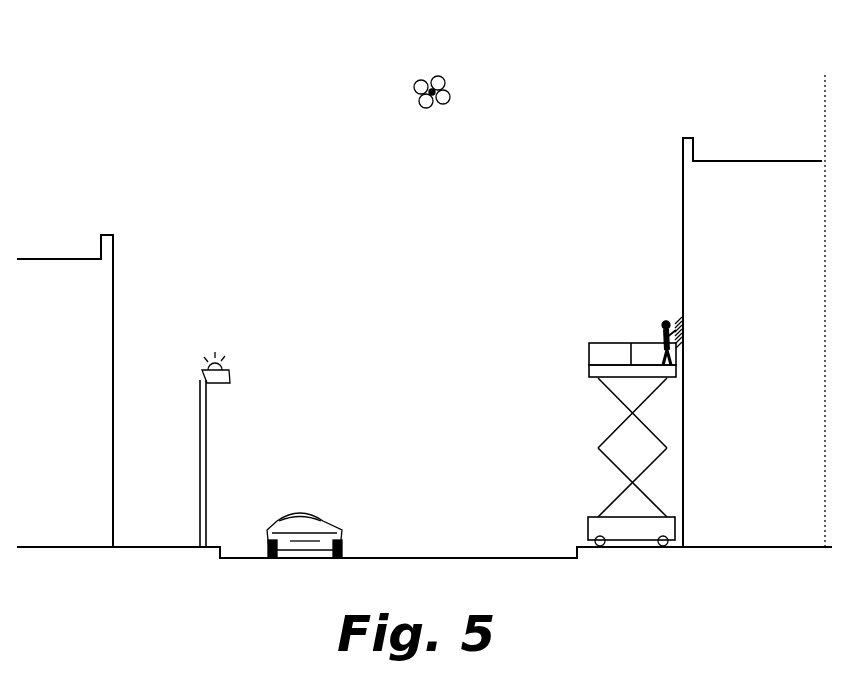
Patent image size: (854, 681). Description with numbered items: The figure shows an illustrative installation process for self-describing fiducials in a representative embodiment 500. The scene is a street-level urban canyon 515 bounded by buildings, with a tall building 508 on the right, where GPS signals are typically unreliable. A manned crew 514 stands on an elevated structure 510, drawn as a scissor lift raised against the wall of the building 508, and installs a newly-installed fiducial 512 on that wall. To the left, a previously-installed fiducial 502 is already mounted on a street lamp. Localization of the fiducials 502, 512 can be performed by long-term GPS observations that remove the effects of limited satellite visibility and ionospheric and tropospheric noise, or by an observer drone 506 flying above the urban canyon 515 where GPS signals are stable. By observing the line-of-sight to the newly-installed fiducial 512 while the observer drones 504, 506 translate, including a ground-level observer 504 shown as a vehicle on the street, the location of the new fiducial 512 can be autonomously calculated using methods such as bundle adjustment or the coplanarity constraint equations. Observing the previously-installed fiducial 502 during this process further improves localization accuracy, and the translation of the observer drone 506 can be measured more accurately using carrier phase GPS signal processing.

The representative embodiment 500 is at (208, 89).
The previously-installed self-describing fiducial 502 is at (231, 370).
The observer drone 504 is at (322, 513).
The observer drone 506 is at (428, 88).
The building 508 is at (763, 370).
The elevated structure 510 is at (590, 373).
The newly-installed self-describing fiducial 512 is at (677, 318).
The manned crew 514 is at (658, 330).
The urban canyon 515 is at (411, 284).